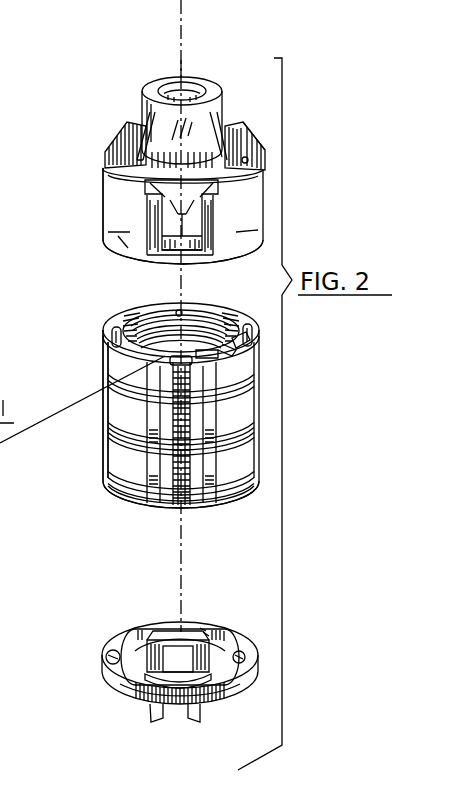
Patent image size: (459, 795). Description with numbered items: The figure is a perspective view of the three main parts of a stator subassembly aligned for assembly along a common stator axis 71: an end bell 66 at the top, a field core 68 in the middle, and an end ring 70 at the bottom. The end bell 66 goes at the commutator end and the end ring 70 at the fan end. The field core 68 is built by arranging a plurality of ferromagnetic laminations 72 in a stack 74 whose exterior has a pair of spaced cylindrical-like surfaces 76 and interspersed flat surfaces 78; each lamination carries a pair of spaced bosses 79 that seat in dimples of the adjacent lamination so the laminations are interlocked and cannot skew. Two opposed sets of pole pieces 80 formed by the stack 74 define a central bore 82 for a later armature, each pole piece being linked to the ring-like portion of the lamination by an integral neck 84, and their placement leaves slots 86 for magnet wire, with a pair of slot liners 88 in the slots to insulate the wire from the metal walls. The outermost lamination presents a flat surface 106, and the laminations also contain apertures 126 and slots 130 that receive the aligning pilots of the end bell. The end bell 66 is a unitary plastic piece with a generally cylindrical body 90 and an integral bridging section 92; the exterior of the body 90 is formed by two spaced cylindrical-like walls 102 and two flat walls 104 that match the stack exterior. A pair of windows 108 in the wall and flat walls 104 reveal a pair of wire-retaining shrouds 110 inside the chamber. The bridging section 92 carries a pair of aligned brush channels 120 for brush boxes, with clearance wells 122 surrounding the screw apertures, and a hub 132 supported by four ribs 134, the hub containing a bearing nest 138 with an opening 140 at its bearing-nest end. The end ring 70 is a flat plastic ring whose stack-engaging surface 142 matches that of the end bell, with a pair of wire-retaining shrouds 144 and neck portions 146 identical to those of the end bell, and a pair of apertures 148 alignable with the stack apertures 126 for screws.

The end bell 66 is at (88, 100).
The field core 68 is at (75, 335).
The end ring 70 is at (65, 620).
The stator axis 71 is at (178, 29).
The ferromagnetic laminations 72 is at (103, 478).
The stack 74 is at (96, 469).
The cylindrical-like surfaces 76 is at (110, 447).
The flat surfaces 78 is at (152, 303).
The bosses 79 is at (197, 400).
The pole pieces 80 is at (135, 320).
The central bore 82 is at (184, 312).
The neck 84 is at (175, 310).
The slots 86 is at (243, 467).
The slot liners 88 is at (205, 322).
The body 90 is at (100, 184).
The bridging section 92 is at (133, 103).
The cylindrical-like walls 102 is at (130, 232).
The flat walls 104 is at (160, 248).
The flat surface 106 is at (250, 320).
The windows 108 is at (144, 204).
The wire-retaining shrouds 110 is at (250, 213).
The brush channels 120 is at (110, 147).
The clearance wells 122 is at (235, 160).
The apertures 126 is at (258, 347).
The slots 130 is at (112, 338).
The hub 132 is at (212, 120).
The ribs 134 is at (105, 160).
The bearing nest 138 is at (170, 74).
The opening 140 is at (187, 80).
The stack-engaging surface 142 is at (120, 628).
The wire-retaining shrouds 144 is at (203, 632).
The neck portions 146 is at (170, 633).
The apertures 148 is at (106, 653).